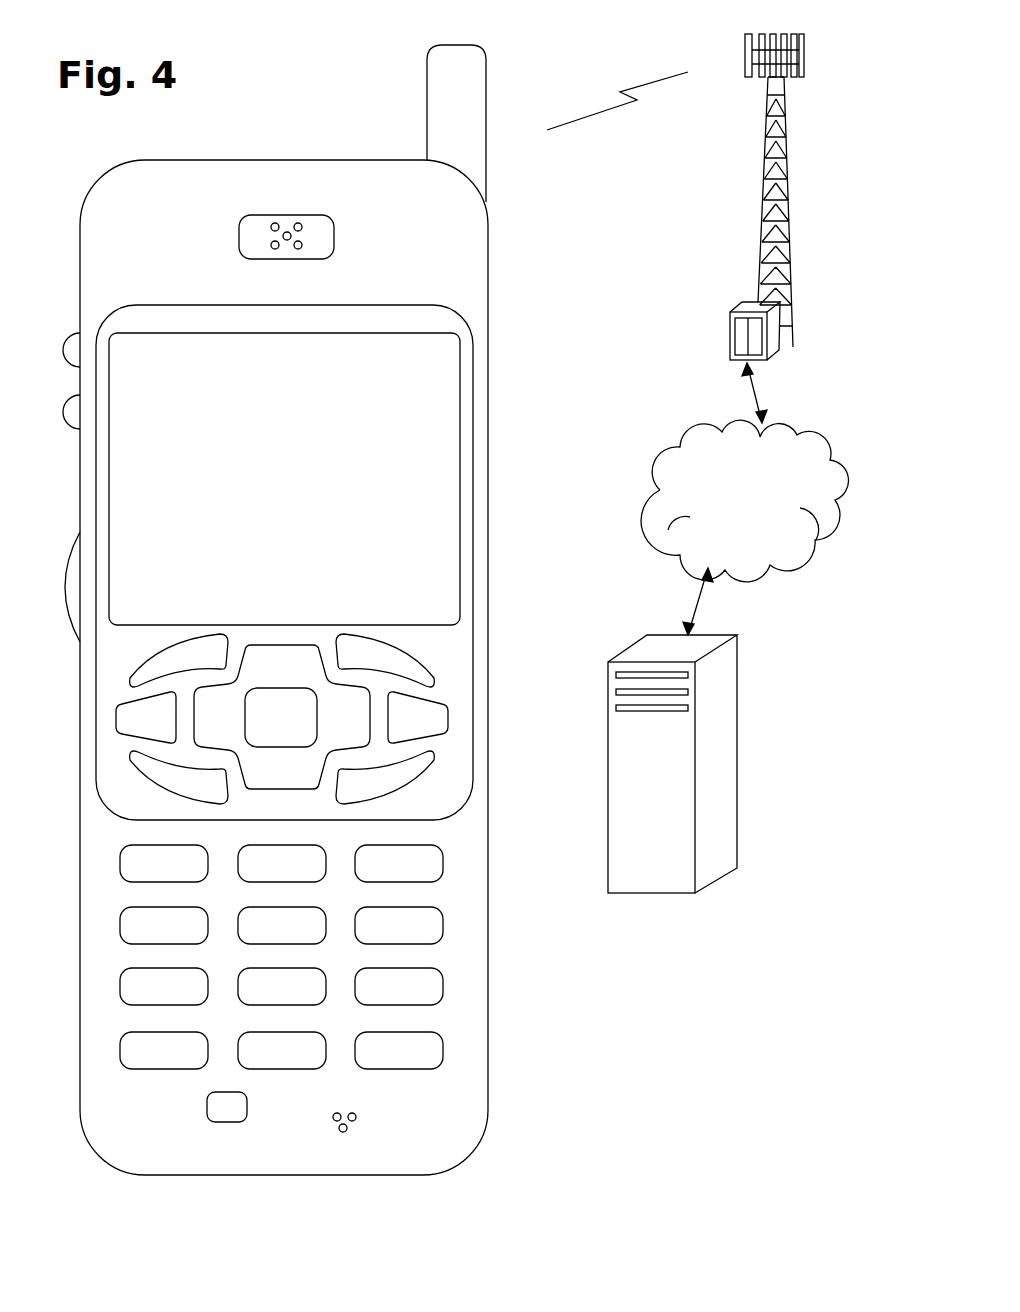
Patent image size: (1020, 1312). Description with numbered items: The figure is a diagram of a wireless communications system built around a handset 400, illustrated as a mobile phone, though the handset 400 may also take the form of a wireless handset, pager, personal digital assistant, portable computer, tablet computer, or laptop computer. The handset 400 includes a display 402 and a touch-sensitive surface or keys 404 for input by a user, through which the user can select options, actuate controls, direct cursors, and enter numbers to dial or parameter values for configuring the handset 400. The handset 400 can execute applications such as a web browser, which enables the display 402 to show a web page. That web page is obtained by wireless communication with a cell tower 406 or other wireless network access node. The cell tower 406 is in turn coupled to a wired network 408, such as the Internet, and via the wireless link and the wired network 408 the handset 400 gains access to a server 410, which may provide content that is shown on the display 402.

The handset 400 is at (311, 625).
The display 402 is at (462, 348).
The keys 404 is at (498, 635).
The cell tower 406 is at (758, 212).
The wired network 408 is at (667, 548).
The server 410 is at (650, 893).